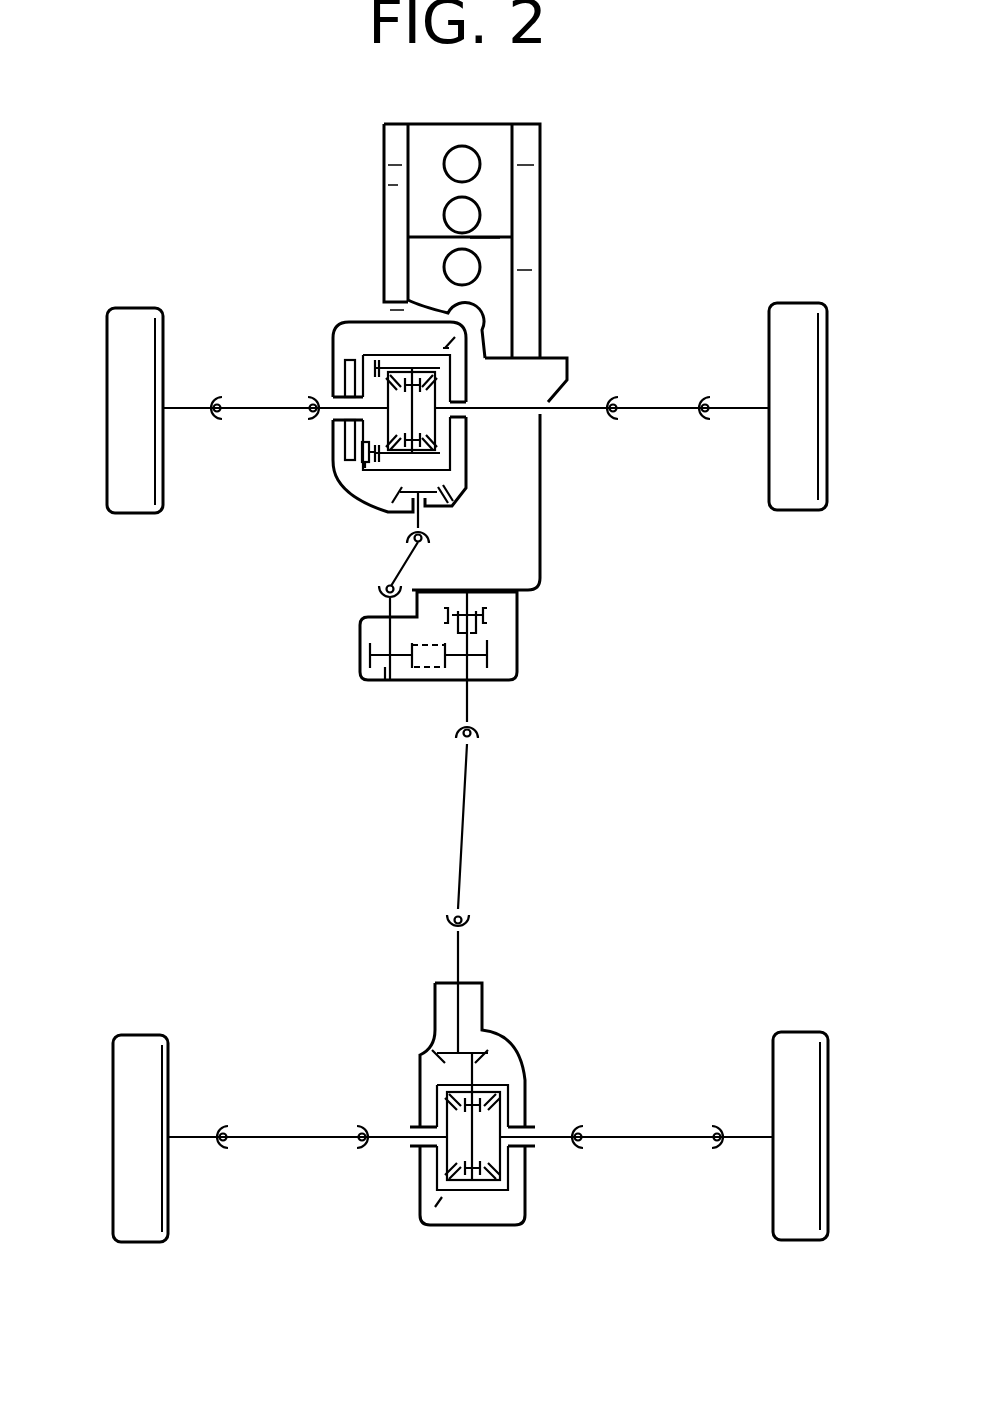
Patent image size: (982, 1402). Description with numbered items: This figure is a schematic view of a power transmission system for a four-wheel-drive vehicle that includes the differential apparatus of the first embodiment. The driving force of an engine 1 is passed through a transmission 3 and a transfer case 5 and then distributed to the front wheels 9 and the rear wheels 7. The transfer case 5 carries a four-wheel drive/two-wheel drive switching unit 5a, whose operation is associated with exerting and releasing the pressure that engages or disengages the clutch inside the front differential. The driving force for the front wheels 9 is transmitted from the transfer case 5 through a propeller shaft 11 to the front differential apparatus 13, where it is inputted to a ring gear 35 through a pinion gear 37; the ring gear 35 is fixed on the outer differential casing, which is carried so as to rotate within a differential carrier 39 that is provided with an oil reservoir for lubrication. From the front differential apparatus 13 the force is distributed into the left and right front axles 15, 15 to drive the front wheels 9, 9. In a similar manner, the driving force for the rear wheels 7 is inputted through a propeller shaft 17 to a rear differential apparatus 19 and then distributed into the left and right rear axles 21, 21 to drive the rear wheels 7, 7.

The engine 1 is at (540, 176).
The transmission 3 is at (543, 478).
The transfer case 5 is at (518, 670).
The 4-wheel drive/2-wheel drive switching unit 5a is at (495, 634).
The rear wheels 7 is at (168, 1042).
The front wheels 9 is at (163, 318).
The propeller shaft 11 is at (397, 566).
The front differential apparatus 13 is at (323, 480).
The front axles 15 is at (265, 408).
The propeller shaft 17 is at (465, 812).
The rear differential apparatus 19 is at (530, 1062).
The rear axles 21 is at (282, 1137).
The ring gear 35 is at (458, 495).
The pinion gear 37 is at (430, 513).
The differential carrier 39 is at (352, 322).